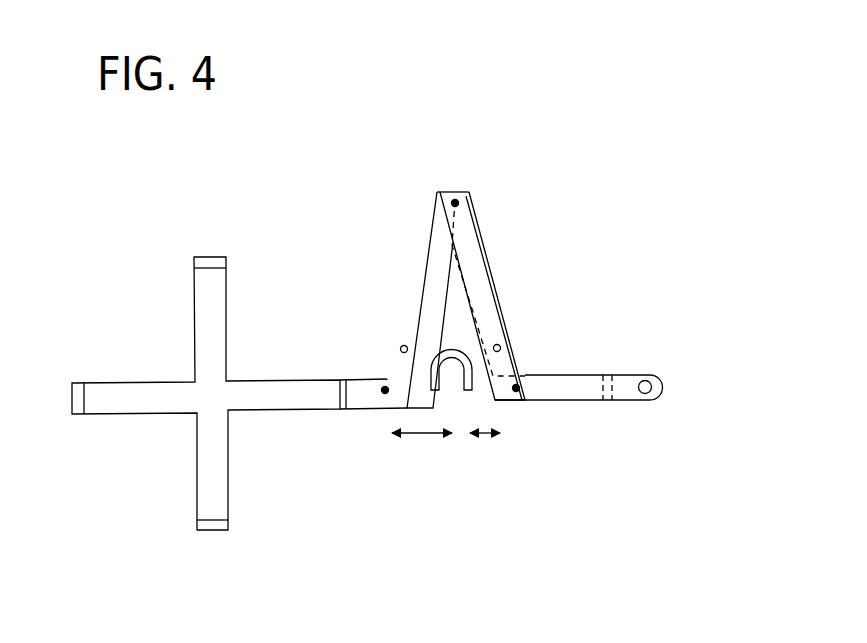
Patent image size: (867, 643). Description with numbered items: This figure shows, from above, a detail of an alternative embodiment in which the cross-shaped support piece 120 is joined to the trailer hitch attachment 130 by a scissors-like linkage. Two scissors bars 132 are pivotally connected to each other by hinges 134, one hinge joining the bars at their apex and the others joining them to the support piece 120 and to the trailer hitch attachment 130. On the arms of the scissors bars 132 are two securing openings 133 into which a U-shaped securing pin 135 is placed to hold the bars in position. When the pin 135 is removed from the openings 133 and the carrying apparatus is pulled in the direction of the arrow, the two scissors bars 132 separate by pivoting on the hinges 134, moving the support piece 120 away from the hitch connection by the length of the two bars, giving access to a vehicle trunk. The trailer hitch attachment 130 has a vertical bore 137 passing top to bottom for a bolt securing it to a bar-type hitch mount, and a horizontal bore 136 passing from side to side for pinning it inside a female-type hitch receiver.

The support piece 120 is at (243, 347).
The trailer hitch attachment 130 is at (624, 383).
The scissors bars 132 is at (413, 267).
The securing openings 133 is at (401, 347).
The hinges 134 is at (385, 390).
The U-shaped securing pin 135 is at (444, 400).
The horizontal bore 136 is at (608, 402).
The vertical bore 137 is at (651, 383).